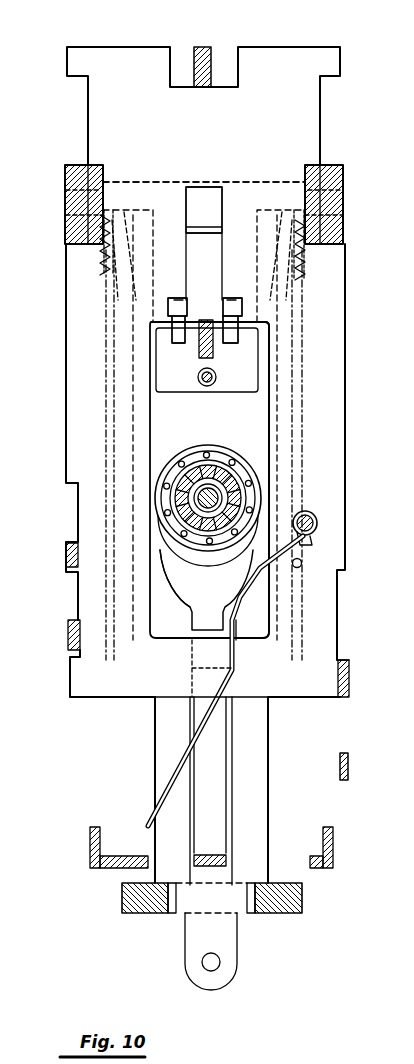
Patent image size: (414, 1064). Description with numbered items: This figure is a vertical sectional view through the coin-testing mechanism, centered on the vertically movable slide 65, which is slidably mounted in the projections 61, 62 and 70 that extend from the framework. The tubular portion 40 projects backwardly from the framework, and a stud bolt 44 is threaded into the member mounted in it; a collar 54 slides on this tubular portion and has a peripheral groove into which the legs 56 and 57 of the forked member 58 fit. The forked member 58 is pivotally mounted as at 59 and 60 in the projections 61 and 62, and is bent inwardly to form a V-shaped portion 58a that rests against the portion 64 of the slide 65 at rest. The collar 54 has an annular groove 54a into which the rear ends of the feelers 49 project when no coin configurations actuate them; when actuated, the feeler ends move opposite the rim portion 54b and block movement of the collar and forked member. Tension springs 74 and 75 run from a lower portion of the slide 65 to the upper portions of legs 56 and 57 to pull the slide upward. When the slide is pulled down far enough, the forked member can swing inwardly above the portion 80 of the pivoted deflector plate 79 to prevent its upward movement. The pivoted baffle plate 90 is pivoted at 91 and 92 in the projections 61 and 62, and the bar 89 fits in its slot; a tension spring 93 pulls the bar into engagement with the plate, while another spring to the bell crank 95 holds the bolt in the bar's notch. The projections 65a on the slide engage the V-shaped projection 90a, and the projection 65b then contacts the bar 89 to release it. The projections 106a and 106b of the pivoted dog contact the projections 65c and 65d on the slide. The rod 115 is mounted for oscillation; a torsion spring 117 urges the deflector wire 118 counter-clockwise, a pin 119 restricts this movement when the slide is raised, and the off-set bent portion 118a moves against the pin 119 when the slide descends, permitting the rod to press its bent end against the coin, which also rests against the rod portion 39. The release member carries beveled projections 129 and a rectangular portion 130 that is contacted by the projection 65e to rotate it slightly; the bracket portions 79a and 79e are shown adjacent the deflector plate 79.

The portion of rod 39 is at (399, 156).
The tubular portion 40 is at (208, 547).
The stud bolt 44 is at (214, 485).
The feelers 49 is at (190, 464).
The collar 54 is at (214, 450).
The annular groove 54a is at (236, 455).
The rim portion 54b is at (178, 560).
The leg 56 is at (156, 428).
The leg 57 is at (263, 428).
The forked member 58 is at (190, 613).
The V-shaped portion 58a is at (192, 658).
The pivot 59 is at (68, 216).
The pivot 60 is at (344, 216).
The projection 61 is at (66, 165).
The projection 62 is at (343, 168).
The portion of slide 64 is at (205, 682).
The vertically movable slide 65 is at (300, 47).
The projections 65a is at (194, 298).
The projection 65b is at (190, 207).
The projection 65c is at (68, 542).
The projection 65d is at (70, 670).
The projection 65e is at (350, 680).
The projection 70 is at (304, 900).
The tension spring 74 is at (100, 262).
The tension spring 75 is at (306, 276).
The pivoted deflector plate 79 is at (333, 851).
The left bracket 79a is at (118, 852).
The bracket flange 79e is at (314, 856).
The portion of deflector plate 80 is at (228, 860).
The bar 89 is at (214, 320).
The pivoted baffle plate 90 is at (258, 182).
The V-shaped projection 90a is at (236, 352).
The pivot 91 is at (66, 196).
The pivot 92 is at (344, 196).
The tension spring 93 is at (198, 377).
The bell crank 95 is at (203, 47).
The projection of dog 106a is at (66, 558).
The projection of dog 106b is at (68, 636).
The rod 115 is at (306, 511).
The torsion spring 117 is at (312, 541).
The deflector wire 118 is at (234, 680).
The off-set bent portion 118a is at (240, 640).
The pin 119 is at (302, 561).
The beveled projections 129 is at (348, 660).
The rectangular portion 130 is at (348, 762).